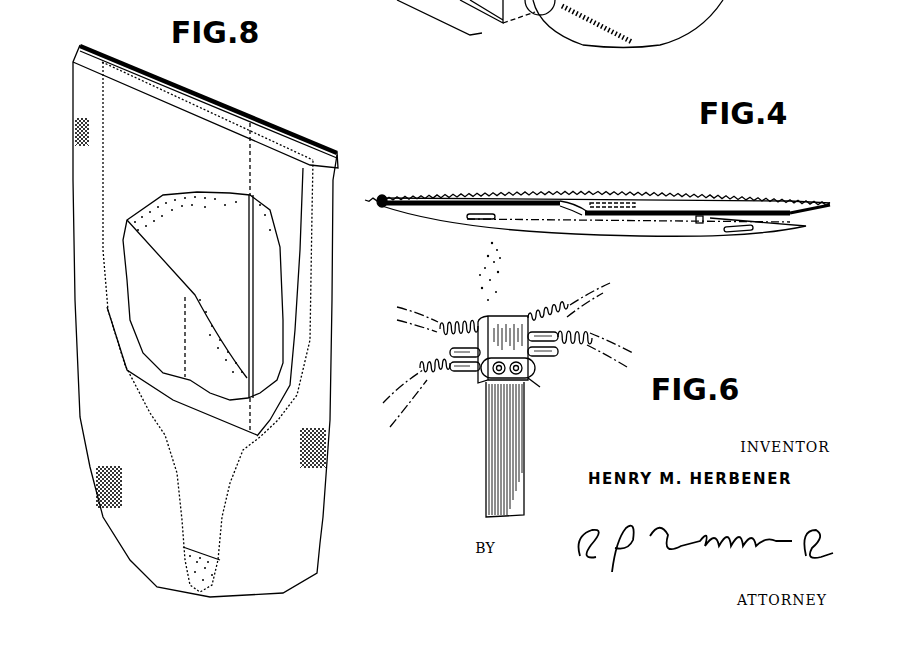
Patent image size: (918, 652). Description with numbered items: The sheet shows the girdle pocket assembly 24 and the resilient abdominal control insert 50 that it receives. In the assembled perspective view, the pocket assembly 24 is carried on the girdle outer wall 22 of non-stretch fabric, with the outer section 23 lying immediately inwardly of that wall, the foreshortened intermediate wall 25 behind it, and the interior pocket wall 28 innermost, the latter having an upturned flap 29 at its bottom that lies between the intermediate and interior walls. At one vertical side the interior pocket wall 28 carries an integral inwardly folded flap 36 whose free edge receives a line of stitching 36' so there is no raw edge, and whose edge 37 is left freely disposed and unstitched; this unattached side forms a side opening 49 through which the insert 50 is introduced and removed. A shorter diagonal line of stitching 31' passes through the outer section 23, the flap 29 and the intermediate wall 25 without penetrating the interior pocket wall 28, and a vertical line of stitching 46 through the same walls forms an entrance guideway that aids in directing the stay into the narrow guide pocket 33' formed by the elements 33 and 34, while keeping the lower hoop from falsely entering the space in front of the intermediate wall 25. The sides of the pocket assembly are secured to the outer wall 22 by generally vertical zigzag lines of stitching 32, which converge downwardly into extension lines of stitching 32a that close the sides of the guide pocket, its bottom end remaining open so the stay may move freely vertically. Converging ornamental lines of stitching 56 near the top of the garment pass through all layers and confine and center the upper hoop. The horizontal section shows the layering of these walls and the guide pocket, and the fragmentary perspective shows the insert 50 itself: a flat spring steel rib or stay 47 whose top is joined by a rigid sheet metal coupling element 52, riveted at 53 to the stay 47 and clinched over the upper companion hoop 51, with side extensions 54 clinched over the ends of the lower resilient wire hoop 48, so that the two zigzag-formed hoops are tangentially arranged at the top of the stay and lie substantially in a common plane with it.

In FIG. 8, the outer wall 22 is at (82, 183).
In FIG. 4, the outer wall 22 is at (628, 200).
In FIG. 8, the outer section 23 is at (213, 229).
In FIG. 4, the outer section 23 is at (662, 202).
In FIG. 8, the pocket assembly 24 is at (220, 147).
In FIG. 4, the intermediate wall 25 is at (511, 195).
In FIG. 8, the interior pocket wall 28 is at (151, 151).
In FIG. 4, the interior pocket wall 28 is at (672, 238).
In FIG. 8, the upturned flap 29 is at (143, 298).
In FIG. 4, the upturned flap 29 is at (490, 205).
In FIG. 8, the shorter line of stitching 31' is at (187, 299).
In FIG. 8, the zigzag lines of stitching 32 is at (100, 258).
In FIG. 8, the extension lines of stitching 32a is at (178, 481).
In FIG. 8, the guide pocket element 33 is at (222, 564).
In FIG. 8, the narrow guide pocket 33' is at (258, 349).
In FIG. 8, the guide pocket element 34 is at (205, 529).
In FIG. 8, the inwardly folded flap 36 is at (241, 265).
In FIG. 4, the inwardly folded flap 36 is at (776, 244).
In FIG. 8, the line of stitching 36' is at (229, 288).
In FIG. 4, the edge 37 is at (700, 216).
In FIG. 8, the vertical line of stitching 46 is at (185, 337).
In FIG. 4, the vertical line of stitching 46 is at (562, 200).
In FIG. 4, the rib or stay 47 is at (598, 203).
In FIG. 6, the rib or stay 47 is at (514, 441).
In FIG. 4, the lower resilient wire hoop 48 is at (727, 232).
In FIG. 6, the lower resilient wire hoop 48 is at (428, 374).
In FIG. 8, the side opening 49 is at (295, 296).
In FIG. 4, the side opening 49 is at (808, 223).
In FIG. 6, the resilient abdominal control insert 50 is at (591, 325).
In FIG. 6, the upper companion hoop 51 is at (553, 307).
In FIG. 6, the rigid coupling element 52 is at (506, 332).
In FIG. 6, the rivet 53 is at (527, 377).
In FIG. 6, the side extensions 54 is at (458, 372).
In FIG. 8, the ornamental lines of stitching 56 is at (197, 413).